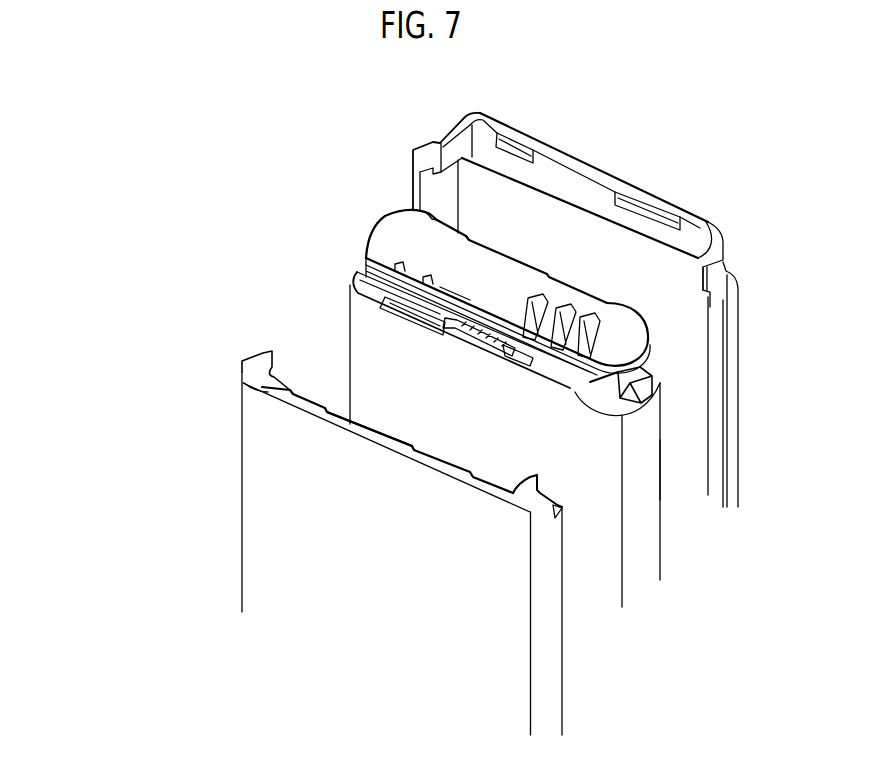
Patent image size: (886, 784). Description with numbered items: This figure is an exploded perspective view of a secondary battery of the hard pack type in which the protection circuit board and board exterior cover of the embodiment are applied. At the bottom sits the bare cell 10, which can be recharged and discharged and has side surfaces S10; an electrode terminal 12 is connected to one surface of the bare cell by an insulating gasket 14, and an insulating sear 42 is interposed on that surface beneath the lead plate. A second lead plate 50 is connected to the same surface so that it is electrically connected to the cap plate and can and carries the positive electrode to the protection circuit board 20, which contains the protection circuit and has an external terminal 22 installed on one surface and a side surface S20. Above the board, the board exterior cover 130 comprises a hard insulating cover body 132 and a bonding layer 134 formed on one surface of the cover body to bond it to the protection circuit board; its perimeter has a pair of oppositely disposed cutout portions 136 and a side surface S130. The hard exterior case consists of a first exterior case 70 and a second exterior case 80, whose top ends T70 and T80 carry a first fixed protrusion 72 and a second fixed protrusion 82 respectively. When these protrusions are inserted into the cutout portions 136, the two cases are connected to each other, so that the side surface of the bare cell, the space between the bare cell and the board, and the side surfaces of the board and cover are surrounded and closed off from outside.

The bare cell 10 is at (653, 555).
The electrode terminal 12 is at (480, 340).
The insulating gasket 14 is at (508, 352).
The protection circuit board 20 is at (544, 368).
The external terminal 22 is at (560, 373).
The insulating sear 42 is at (422, 322).
The second lead plate 50 is at (648, 373).
The first exterior case 70 is at (242, 480).
The first fixed protrusion 72 is at (445, 450).
The second exterior case 80 is at (563, 177).
The second fixed protrusion 82 is at (647, 210).
The board exterior cover 130 is at (565, 254).
The cover body 132 is at (383, 233).
The bonding layer 134 is at (367, 258).
The cutout portions 136 is at (433, 220).
The side surfaces S10 is at (576, 512).
The side surface S20 is at (590, 370).
The side surface S130 is at (447, 312).
The top end T70 is at (248, 372).
The top end T80 is at (623, 187).